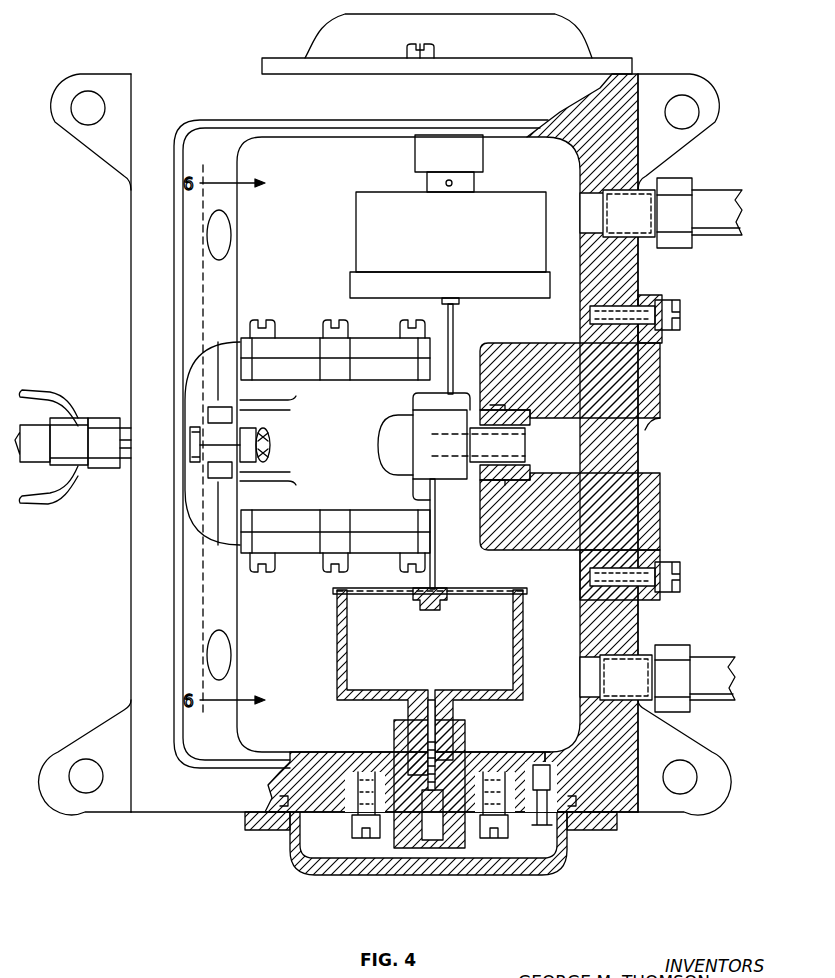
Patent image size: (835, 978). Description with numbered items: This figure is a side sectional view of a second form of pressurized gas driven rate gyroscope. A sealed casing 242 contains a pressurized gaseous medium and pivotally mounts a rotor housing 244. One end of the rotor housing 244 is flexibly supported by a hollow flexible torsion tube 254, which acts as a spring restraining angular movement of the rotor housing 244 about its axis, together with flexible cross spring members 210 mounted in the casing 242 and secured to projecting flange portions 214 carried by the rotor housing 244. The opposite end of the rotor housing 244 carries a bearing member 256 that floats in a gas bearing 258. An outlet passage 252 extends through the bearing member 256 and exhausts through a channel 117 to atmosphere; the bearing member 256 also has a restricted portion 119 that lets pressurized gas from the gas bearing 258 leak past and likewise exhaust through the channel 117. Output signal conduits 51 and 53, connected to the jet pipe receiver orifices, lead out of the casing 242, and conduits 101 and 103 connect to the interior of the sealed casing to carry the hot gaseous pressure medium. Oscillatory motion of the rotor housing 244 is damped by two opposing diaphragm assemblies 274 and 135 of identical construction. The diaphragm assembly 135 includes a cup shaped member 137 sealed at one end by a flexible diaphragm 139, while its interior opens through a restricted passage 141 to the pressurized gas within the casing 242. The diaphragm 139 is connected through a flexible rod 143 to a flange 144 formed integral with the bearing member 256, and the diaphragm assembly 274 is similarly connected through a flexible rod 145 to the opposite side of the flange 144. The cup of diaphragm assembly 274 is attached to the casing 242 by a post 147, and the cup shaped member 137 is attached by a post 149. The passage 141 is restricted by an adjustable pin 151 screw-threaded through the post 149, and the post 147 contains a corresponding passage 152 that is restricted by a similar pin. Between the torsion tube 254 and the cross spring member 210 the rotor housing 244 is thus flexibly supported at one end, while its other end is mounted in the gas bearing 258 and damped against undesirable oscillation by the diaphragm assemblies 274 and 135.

The output signal conduit 51 is at (46, 400).
The output signal conduit 53 is at (47, 484).
The conduit 101 is at (708, 195).
The conduit 103 is at (695, 657).
The channel 117 is at (640, 428).
The restricted portion 119 is at (527, 428).
The diaphragm assembly 135 is at (328, 652).
The cup shaped member 137 is at (523, 650).
The flexible diaphragm 139 is at (392, 594).
The restricted passage 141 is at (440, 712).
The flexible rod 143 is at (436, 548).
The flange 144 is at (458, 447).
The flexible rod 145 is at (456, 336).
The post 147 is at (427, 181).
The post 149 is at (406, 712).
The adjustable pin 151 is at (452, 730).
The passage 152 is at (453, 183).
The flexible cross spring member 210 is at (200, 372).
The projecting flange portion 214 is at (246, 410).
The sealed casing 242 is at (174, 250).
The rotor housing 244 is at (344, 457).
The outlet passage 252 is at (535, 447).
The torsion tube 254 is at (206, 440).
The bearing member 256 is at (487, 472).
The gas bearing 258 is at (413, 396).
The diaphragm assembly 274 is at (347, 234).